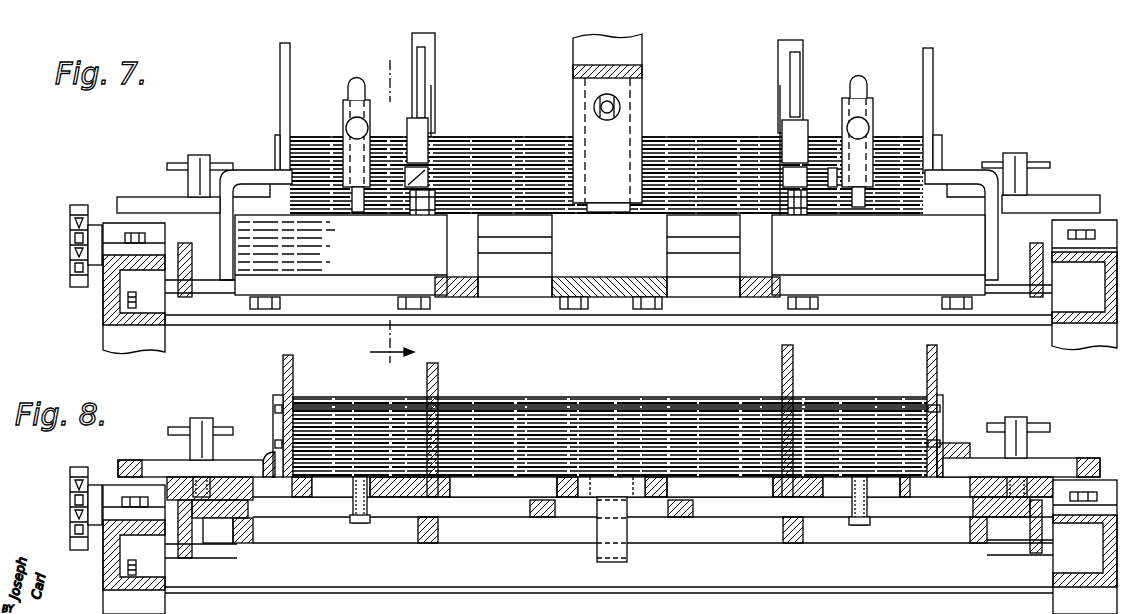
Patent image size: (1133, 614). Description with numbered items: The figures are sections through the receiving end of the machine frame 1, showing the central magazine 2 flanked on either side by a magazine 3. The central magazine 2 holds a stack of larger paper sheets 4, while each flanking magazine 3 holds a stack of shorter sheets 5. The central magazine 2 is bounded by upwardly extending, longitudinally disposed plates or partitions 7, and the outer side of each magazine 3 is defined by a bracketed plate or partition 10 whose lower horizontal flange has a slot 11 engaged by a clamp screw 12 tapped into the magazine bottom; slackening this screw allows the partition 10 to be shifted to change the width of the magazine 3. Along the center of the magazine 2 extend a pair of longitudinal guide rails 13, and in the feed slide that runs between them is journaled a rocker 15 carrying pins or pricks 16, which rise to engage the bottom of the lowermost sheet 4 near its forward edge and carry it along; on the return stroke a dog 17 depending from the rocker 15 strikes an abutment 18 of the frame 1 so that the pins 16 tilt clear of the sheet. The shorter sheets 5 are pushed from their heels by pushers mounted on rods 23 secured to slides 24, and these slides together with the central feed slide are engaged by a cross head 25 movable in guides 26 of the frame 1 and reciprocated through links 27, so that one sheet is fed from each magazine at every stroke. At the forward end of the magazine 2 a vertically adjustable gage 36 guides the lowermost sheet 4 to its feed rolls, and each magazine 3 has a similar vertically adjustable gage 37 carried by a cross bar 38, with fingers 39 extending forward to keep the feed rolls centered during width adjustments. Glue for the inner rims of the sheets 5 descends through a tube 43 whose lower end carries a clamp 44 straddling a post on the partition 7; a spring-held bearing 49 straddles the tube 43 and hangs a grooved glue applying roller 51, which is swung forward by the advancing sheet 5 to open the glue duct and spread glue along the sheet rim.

In FIG. 7, the machine frame 1 is at (108, 300).
In FIG. 8, the machine frame 1 is at (106, 570).
In FIG. 7, the central magazine 2 is at (606, 161).
In FIG. 8, the central magazine 2 is at (609, 422).
In FIG. 7, the flanking magazine 3 is at (606, 157).
In FIG. 8, the flanking magazine 3 is at (609, 423).
In FIG. 8, the larger paper sheets 4 is at (535, 400).
In FIG. 7, the shorter sheets 5 is at (828, 142).
In FIG. 8, the shorter sheets 5 is at (418, 408).
In FIG. 7, the plates or partitions 7 is at (436, 50).
In FIG. 8, the plates or partitions 7 is at (439, 384).
In FIG. 7, the bracketed plate or partition 10 is at (291, 64).
In FIG. 8, the bracketed plate or partition 10 is at (282, 372).
In FIG. 7, the slot 11 is at (608, 201).
In FIG. 8, the slot 11 is at (238, 470).
In FIG. 7, the clamp screw 12 is at (200, 165).
In FIG. 8, the clamp screw 12 is at (197, 422).
In FIG. 8, the longitudinal guide rails 13 is at (556, 488).
In FIG. 8, the rocker 15 is at (611, 486).
In FIG. 8, the pins or pricks 16 is at (600, 478).
In FIG. 8, the dog 17 is at (625, 532).
In FIG. 7, the abutment 18 is at (710, 290).
In FIG. 8, the rod 23 is at (352, 498).
In FIG. 8, the slide 24 is at (392, 498).
In FIG. 7, the cross head 25 is at (518, 245).
In FIG. 8, the guides 26 is at (254, 532).
In FIG. 7, the links 27 is at (188, 298).
In FIG. 8, the links 27 is at (188, 560).
In FIG. 7, the vertically adjustable gage 36 is at (607, 123).
In FIG. 7, the vertically adjustable gage 37 is at (362, 78).
In FIG. 7, the cross bar 38 is at (332, 180).
In FIG. 7, the fingers 39 is at (385, 185).
In FIG. 7, the tube 43 is at (426, 78).
In FIG. 7, the clamp 44 is at (420, 130).
In FIG. 7, the bearing 49 is at (410, 178).
In FIG. 7, the glue applying roller 51 is at (448, 218).